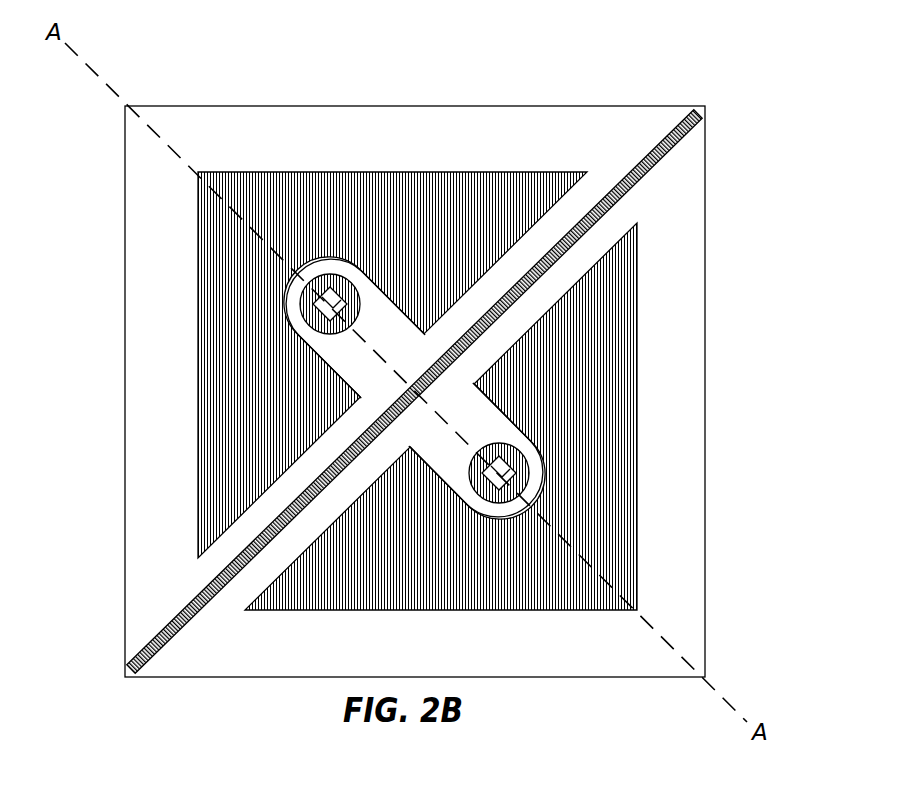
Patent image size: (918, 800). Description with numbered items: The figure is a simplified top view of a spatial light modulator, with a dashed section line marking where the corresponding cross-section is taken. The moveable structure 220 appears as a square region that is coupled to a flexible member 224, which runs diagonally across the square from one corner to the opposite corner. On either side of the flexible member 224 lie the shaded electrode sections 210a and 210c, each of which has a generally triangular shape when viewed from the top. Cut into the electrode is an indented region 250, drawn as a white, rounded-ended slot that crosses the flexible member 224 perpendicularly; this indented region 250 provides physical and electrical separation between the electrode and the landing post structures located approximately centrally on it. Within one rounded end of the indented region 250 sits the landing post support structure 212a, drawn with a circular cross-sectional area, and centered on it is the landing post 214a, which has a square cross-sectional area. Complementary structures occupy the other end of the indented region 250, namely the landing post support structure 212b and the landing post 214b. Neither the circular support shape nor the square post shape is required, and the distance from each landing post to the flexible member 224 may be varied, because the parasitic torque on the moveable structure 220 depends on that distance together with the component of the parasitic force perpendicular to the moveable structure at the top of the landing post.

The electrode section 210a is at (220, 235).
The electrode section 210c is at (298, 424).
The landing post support structure 212a is at (328, 274).
The landing post support structure 212b is at (502, 444).
The landing post 214a is at (344, 296).
The landing post 214b is at (513, 467).
The moveable structure 220 is at (706, 346).
The flexible member 224 is at (689, 130).
The indented region 250 is at (352, 358).